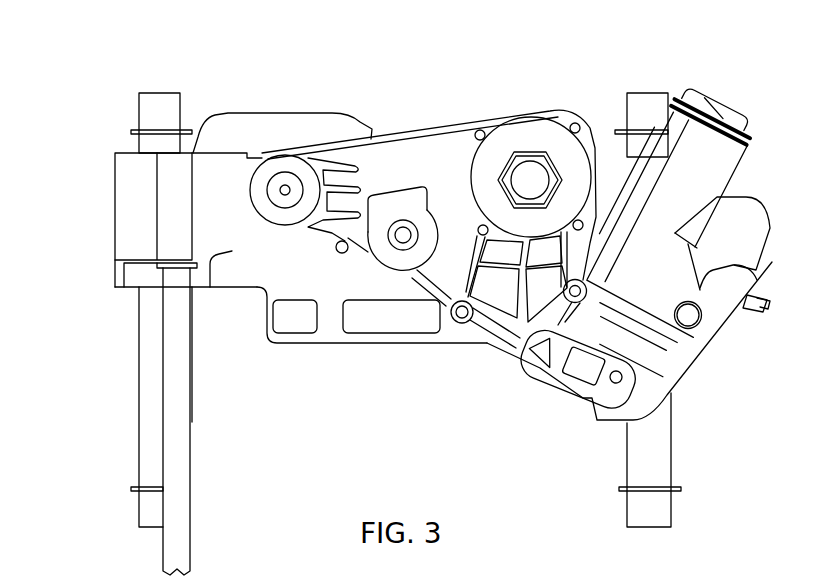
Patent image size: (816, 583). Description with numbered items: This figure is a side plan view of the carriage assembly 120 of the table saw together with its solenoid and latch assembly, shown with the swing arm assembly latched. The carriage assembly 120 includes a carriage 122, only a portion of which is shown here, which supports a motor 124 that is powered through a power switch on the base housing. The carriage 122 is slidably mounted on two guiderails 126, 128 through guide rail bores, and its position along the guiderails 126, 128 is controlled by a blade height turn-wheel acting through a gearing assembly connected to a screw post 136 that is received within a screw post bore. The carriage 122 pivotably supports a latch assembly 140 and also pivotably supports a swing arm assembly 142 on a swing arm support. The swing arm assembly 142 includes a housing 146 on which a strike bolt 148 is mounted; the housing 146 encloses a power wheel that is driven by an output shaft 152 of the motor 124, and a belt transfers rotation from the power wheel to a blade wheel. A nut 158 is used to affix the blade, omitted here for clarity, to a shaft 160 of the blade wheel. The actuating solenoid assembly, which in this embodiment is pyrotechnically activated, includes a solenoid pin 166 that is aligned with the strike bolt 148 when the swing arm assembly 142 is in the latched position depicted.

The carriage assembly 120 is at (135, 66).
The carriage 122 is at (115, 287).
The motor 124 is at (297, 114).
The guiderail 126 is at (148, 107).
The guiderail 128 is at (663, 97).
The screw post 136 is at (188, 503).
The latch assembly 140 is at (700, 350).
The swing arm assembly 142 is at (430, 131).
The housing 146 is at (447, 300).
The strike bolt 148 is at (668, 393).
The output shaft 152 is at (285, 189).
The nut 158 is at (543, 157).
The shaft 160 is at (543, 184).
The solenoid pin 166 is at (533, 377).